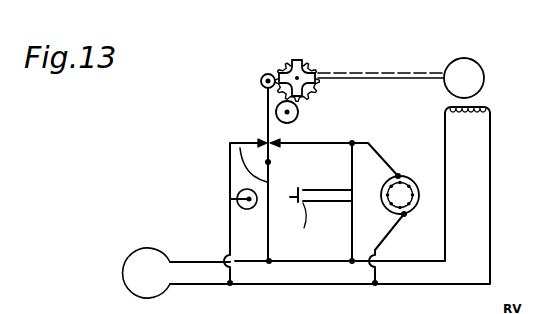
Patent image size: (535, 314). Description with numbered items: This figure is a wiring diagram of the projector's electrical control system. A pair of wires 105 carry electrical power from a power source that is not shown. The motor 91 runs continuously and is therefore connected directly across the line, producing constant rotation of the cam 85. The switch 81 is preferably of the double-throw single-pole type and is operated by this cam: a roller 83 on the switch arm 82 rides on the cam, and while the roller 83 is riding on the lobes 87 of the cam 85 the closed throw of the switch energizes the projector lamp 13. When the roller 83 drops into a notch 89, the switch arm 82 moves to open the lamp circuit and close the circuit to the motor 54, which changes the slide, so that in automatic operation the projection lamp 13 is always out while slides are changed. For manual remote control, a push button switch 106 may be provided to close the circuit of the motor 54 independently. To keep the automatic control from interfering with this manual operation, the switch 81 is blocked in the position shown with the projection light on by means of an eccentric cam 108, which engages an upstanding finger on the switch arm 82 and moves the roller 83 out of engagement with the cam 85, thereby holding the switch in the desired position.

The projector lamp 13 is at (244, 191).
The motor 54 is at (411, 178).
The switch 81 is at (258, 98).
The switch arm 82 is at (239, 148).
The roller 83 is at (261, 79).
The cam 85 is at (324, 61).
The lobes 87 is at (298, 60).
The notch 89 is at (291, 63).
The motor 91 is at (466, 58).
The pair of wires 105 is at (132, 273).
The push button switch 106 is at (320, 202).
The eccentric cam 108 is at (299, 112).